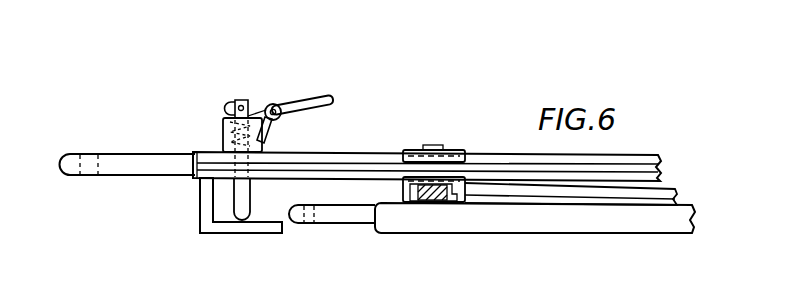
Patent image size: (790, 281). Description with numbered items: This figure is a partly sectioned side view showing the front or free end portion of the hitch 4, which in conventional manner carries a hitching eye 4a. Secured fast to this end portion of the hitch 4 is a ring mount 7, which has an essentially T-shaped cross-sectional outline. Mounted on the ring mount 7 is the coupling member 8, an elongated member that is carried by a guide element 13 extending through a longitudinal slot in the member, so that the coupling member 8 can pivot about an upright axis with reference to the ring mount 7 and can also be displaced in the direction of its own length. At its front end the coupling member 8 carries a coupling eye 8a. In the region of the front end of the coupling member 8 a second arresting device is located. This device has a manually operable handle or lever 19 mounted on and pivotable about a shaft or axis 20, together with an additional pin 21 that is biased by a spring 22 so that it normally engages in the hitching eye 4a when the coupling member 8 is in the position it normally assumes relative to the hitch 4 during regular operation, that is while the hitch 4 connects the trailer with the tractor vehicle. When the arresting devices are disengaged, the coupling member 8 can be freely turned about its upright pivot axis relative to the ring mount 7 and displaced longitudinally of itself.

The hitch 4 is at (566, 233).
The hitching eye 4a is at (314, 224).
The ring mount 7 is at (436, 203).
The coupling member 8 is at (363, 151).
The coupling eye 8a is at (94, 154).
The guide element 13 is at (456, 149).
The handle or lever 19 is at (316, 96).
The shaft or axis 20 is at (268, 104).
The pin 21 is at (244, 203).
The spring 22 is at (222, 127).